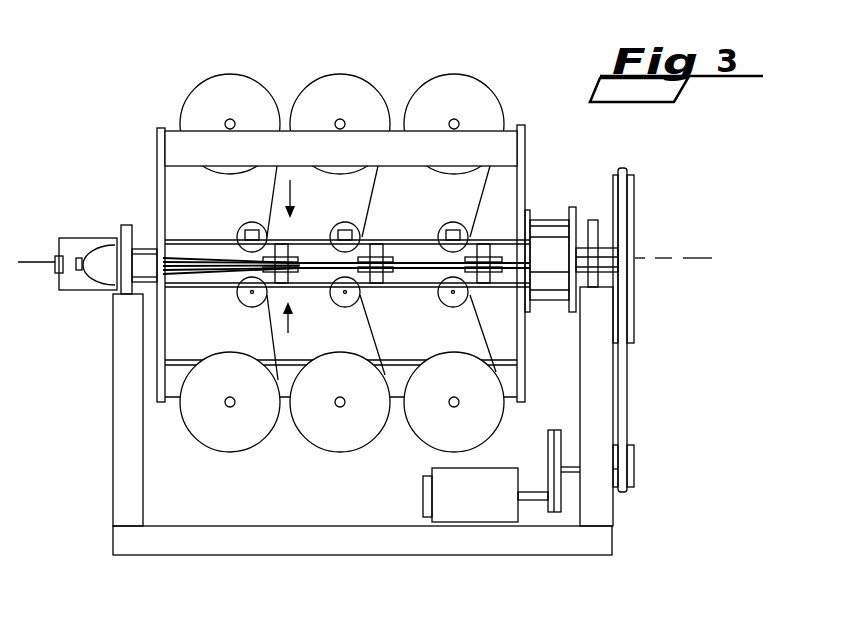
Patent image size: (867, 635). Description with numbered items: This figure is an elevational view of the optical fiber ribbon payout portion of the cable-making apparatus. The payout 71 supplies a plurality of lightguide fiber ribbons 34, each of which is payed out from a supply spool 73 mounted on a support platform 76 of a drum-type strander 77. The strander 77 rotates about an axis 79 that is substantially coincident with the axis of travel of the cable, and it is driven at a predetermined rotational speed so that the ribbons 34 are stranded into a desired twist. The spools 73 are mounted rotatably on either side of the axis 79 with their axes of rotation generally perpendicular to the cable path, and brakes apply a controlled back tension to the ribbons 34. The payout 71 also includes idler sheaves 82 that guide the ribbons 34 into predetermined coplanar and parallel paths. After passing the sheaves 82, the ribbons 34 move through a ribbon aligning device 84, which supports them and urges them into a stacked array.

The payout 71 is at (620, 562).
The spool 73 is at (466, 72).
The support platform 76 is at (183, 397).
The drum-type strander 77 is at (528, 165).
The axis 79 is at (657, 258).
The idler sheaves 82 is at (250, 222).
The ribbon aligning device 84 is at (54, 220).
The lightguide fiber ribbon 34 is at (285, 320).